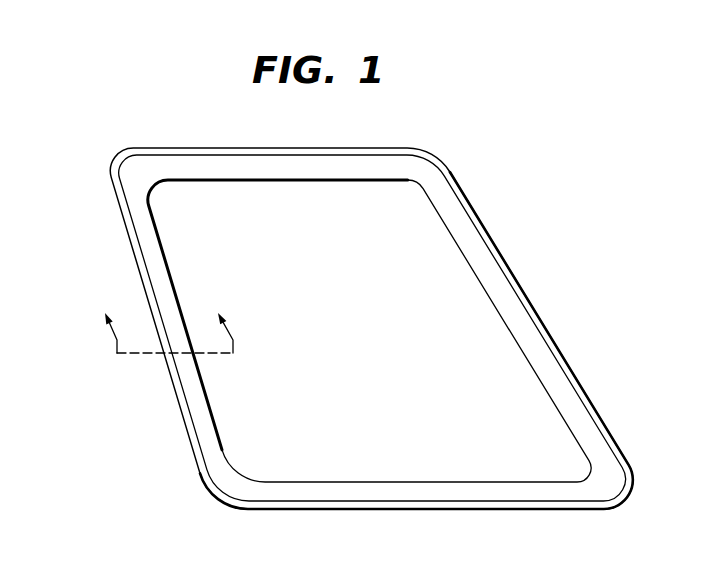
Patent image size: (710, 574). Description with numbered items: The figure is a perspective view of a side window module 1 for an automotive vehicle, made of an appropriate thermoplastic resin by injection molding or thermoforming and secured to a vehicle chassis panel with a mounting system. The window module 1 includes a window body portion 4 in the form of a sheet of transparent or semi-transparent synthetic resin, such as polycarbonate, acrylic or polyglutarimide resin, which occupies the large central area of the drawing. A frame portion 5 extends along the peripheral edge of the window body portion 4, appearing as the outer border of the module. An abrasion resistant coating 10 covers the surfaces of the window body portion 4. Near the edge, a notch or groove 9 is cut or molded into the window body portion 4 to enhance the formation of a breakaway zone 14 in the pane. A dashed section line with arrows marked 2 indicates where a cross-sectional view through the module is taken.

The window module 1 is at (393, 306).
The section line 2- 2 is at (164, 320).
The window body portion 4 is at (462, 283).
The frame portion 5 is at (462, 227).
The notch or groove 9 is at (609, 473).
The abrasion resistant coating 10 is at (533, 400).
The breakaway zone 14 is at (360, 322).